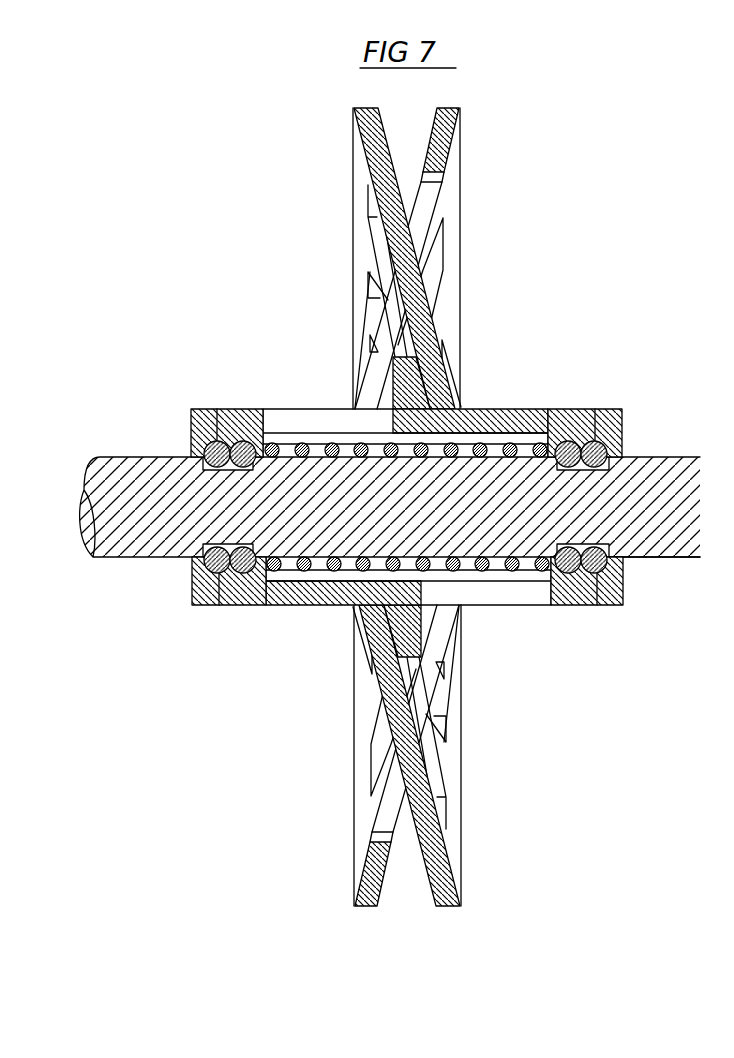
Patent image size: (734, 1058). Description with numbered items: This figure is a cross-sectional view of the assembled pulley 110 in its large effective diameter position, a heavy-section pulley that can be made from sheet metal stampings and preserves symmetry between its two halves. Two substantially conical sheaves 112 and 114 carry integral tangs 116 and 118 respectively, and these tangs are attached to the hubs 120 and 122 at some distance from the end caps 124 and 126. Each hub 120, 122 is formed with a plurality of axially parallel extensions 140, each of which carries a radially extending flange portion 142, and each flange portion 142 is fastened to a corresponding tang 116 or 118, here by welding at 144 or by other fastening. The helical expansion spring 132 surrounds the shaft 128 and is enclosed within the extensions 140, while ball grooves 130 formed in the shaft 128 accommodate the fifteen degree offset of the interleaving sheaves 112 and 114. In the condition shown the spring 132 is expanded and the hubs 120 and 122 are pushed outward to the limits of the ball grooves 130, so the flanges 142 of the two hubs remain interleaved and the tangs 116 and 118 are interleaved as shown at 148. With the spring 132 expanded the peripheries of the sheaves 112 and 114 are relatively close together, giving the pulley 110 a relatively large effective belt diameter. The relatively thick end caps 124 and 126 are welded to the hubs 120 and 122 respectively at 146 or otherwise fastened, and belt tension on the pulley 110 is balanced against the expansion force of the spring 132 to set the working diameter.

The pulley 110 is at (569, 259).
The sheave 112 is at (455, 160).
The sheave 114 is at (362, 170).
The tang 116 is at (422, 220).
The tang 118 is at (386, 274).
The hub 120 is at (245, 605).
The hub 122 is at (572, 605).
The end cap 124 is at (203, 408).
The end cap 126 is at (608, 409).
The shaft 128 is at (650, 560).
The ball grooves 130 is at (638, 457).
The helical expansion spring 132 is at (510, 566).
The extensions 140 is at (513, 409).
The flange portion 142 is at (407, 393).
The weld 144 is at (416, 357).
The weld 146 is at (217, 408).
The interleaving of tangs 148 is at (413, 259).